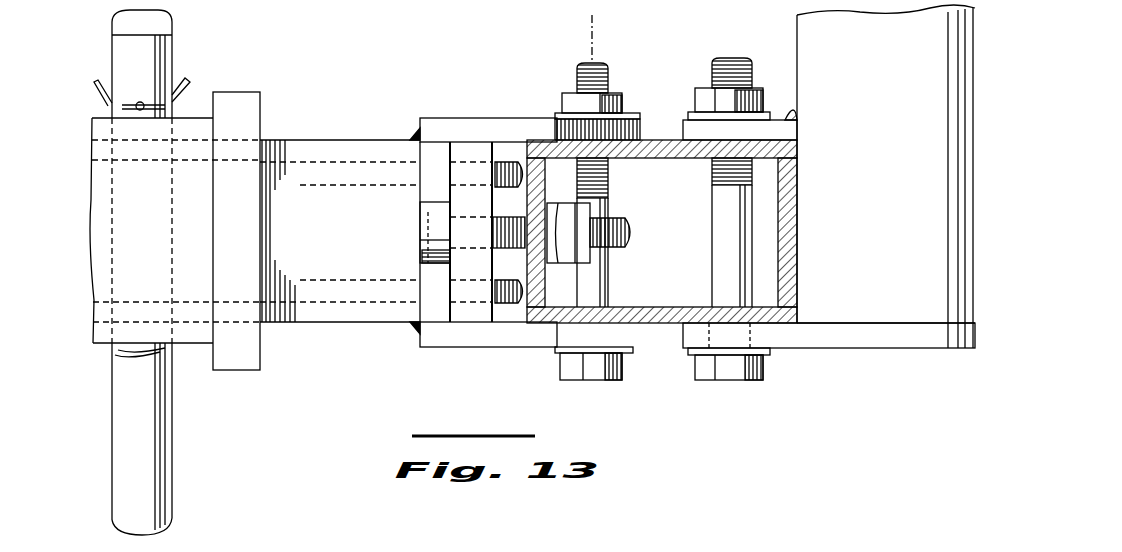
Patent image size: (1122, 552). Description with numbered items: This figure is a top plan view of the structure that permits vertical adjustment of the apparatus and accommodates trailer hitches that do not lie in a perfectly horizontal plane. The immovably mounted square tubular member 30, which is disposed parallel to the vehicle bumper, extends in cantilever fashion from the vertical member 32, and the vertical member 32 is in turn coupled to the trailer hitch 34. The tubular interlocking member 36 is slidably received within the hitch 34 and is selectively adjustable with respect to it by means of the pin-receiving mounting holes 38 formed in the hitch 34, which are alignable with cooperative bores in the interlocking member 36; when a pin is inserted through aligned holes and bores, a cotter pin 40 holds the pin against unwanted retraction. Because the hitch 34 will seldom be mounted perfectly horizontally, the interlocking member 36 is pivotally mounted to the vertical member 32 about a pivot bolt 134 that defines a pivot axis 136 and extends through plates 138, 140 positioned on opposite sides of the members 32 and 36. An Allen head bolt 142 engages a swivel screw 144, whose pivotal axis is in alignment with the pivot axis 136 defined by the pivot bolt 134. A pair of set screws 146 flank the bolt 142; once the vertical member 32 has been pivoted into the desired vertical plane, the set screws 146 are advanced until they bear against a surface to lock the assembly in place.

The square tubular member 30 is at (805, 35).
The vertical member 32 is at (660, 148).
The trailer hitch 34 is at (230, 358).
The tubular interlocking member 36 is at (305, 388).
The pin-receiving mounting holes 38 is at (180, 126).
The cotter pin 40 is at (123, 107).
The pivot bolt 134 is at (620, 380).
The pivot axis 136 is at (590, 42).
The plate 138 is at (478, 122).
The plate 140 is at (510, 335).
The Allen head bolt 142 is at (420, 240).
The swivel screw 144 is at (596, 208).
The set screws 146 is at (432, 162).